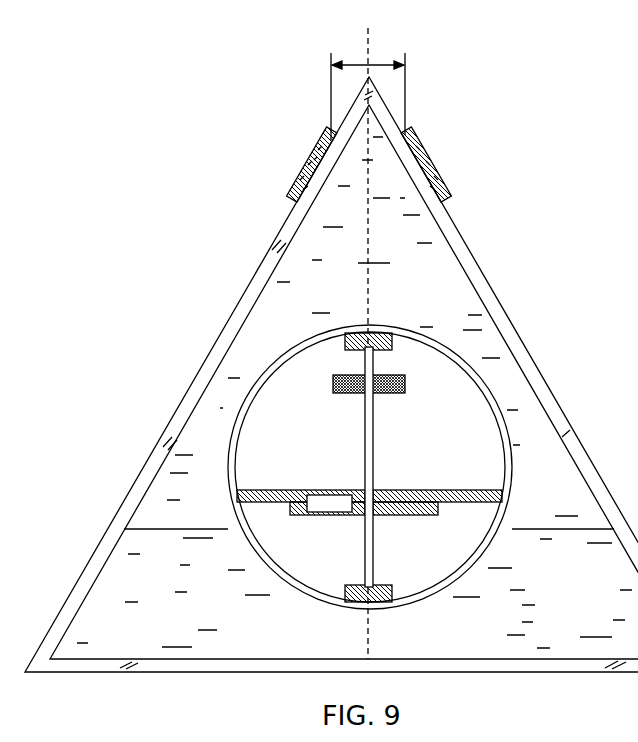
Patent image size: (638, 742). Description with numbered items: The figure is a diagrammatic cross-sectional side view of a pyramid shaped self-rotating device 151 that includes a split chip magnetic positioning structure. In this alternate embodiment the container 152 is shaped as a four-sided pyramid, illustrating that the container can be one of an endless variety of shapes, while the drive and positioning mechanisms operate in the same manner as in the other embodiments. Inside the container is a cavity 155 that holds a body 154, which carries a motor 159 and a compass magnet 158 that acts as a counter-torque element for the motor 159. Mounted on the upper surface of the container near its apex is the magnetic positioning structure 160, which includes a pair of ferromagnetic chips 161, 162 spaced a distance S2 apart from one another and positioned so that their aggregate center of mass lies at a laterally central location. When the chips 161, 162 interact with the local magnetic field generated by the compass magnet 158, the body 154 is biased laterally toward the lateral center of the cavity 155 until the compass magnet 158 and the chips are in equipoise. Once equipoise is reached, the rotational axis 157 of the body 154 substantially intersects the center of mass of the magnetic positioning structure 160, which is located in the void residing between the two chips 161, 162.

The self-rotating device 151 is at (560, 258).
The container 152 is at (524, 343).
The body 154 is at (370, 443).
The cavity 155 is at (172, 492).
The central axis 157 is at (366, 291).
The compass magnet 158 is at (382, 395).
The motor 159 is at (422, 489).
The magnetic positioning structure 160 is at (388, 110).
The ferromagnetic chip 161 is at (310, 148).
The ferromagnetic chip 162 is at (440, 154).
The distance S2 is at (381, 63).